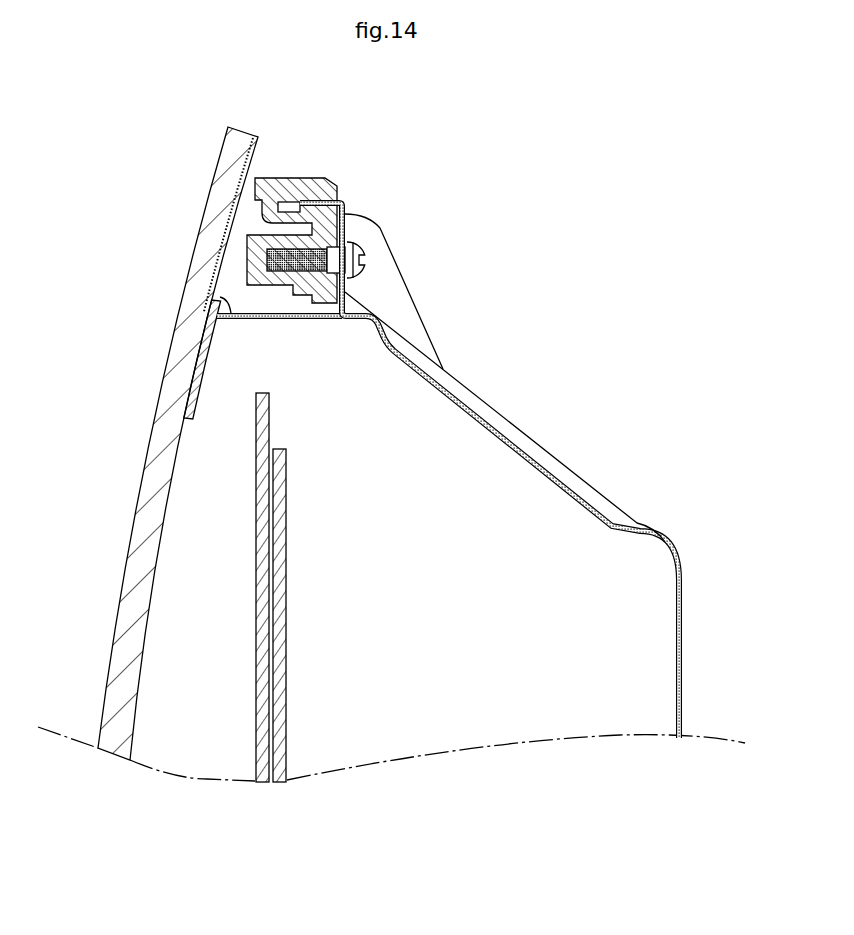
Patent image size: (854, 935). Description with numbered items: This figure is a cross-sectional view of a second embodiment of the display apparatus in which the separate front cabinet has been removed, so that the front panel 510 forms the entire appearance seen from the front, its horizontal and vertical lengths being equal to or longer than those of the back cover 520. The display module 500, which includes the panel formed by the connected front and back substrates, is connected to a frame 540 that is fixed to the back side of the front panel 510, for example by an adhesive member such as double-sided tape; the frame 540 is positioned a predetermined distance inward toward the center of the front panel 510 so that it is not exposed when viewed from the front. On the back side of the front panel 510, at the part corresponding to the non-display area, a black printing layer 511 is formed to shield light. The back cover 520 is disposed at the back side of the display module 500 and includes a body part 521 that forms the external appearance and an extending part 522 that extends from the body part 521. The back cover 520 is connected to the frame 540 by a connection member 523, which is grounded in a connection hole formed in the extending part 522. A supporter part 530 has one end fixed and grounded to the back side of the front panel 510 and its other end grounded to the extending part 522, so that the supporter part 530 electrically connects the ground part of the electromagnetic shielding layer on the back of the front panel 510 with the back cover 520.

The display module 500 is at (245, 616).
The front panel 510 is at (217, 203).
The black printing layer 511 is at (223, 253).
The back cover 520 is at (448, 453).
The body part 521 is at (496, 414).
The extending part 522 is at (350, 285).
The connection member 523 is at (357, 241).
The supporter part 530 is at (213, 289).
The frame 540 is at (316, 177).